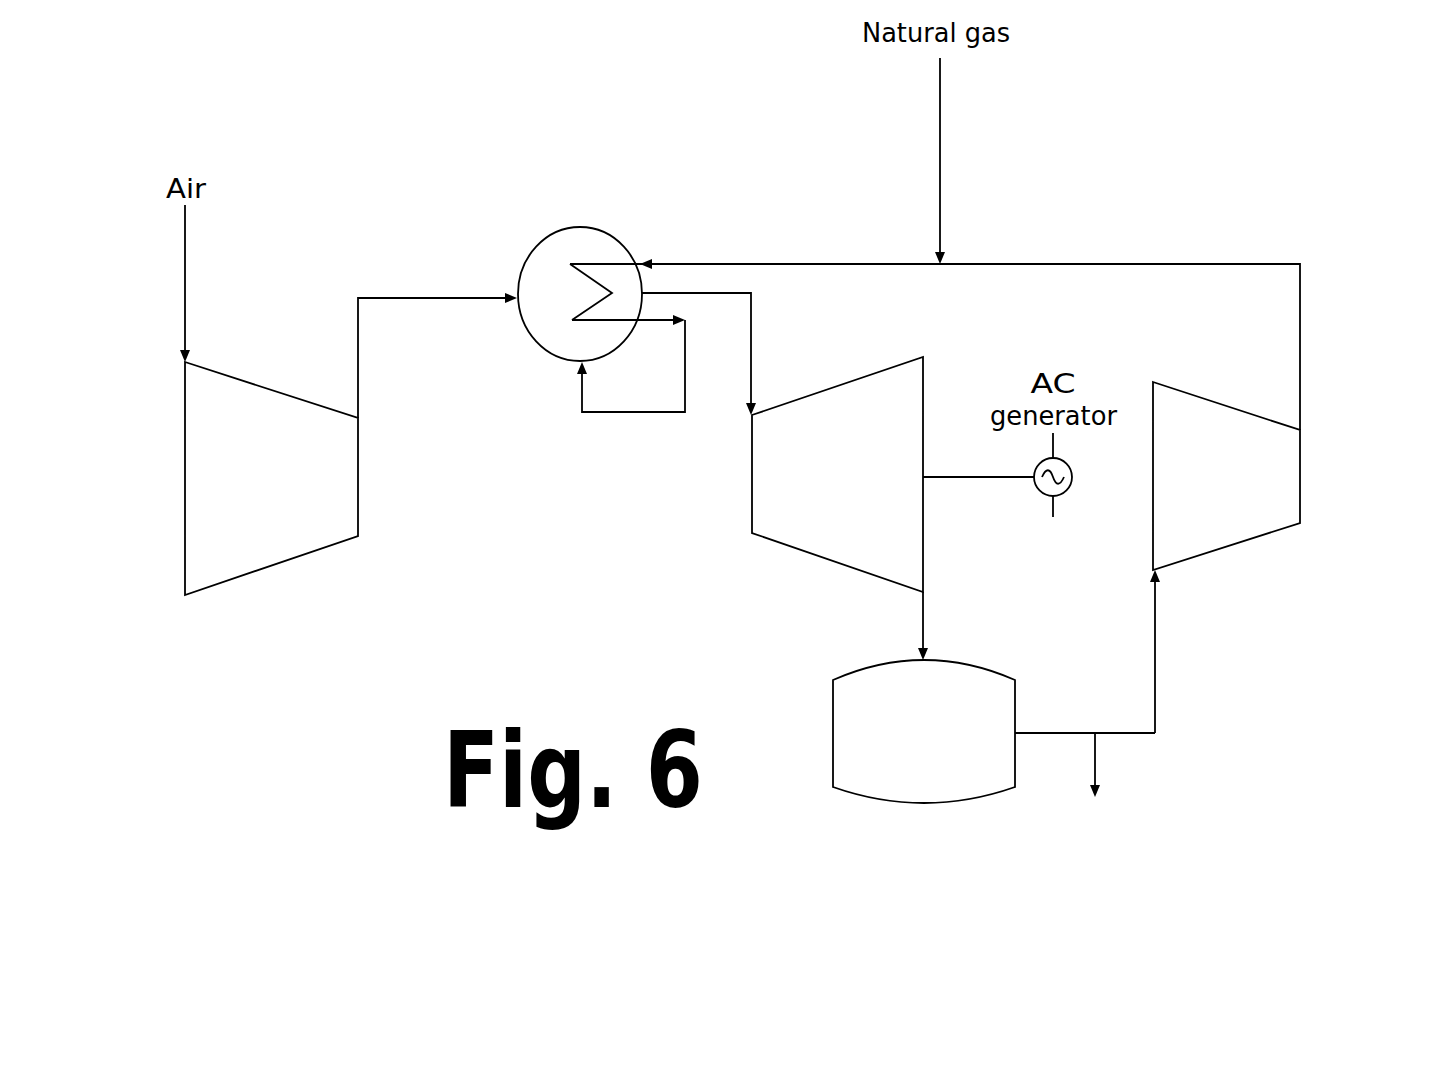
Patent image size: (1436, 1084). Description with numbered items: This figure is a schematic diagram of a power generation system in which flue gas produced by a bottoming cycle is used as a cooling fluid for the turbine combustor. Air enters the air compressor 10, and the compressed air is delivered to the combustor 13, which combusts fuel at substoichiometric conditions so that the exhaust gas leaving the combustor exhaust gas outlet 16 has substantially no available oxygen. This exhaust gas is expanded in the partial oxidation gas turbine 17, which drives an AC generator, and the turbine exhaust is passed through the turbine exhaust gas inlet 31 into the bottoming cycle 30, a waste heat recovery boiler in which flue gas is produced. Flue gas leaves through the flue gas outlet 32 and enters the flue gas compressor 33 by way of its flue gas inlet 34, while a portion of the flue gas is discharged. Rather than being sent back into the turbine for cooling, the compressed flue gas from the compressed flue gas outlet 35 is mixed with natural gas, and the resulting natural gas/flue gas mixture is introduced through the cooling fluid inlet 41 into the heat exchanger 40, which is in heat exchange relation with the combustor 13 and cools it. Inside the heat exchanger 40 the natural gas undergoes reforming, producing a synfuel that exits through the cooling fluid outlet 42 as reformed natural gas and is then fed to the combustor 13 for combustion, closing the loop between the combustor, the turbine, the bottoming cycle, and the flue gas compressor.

The air compressor 10 is at (293, 561).
The combustor 13 is at (575, 226).
The combustor exhaust gas outlet 16 is at (643, 292).
The partial oxidation gas turbine 17 is at (750, 533).
The bottoming cycle 30 is at (833, 712).
The turbine exhaust gas inlet 31 is at (930, 650).
The flue gas outlet 32 is at (1017, 727).
The flue gas compressor 33 is at (1275, 533).
The flue gas inlet 34 is at (1155, 570).
The compressed flue gas outlet 35 is at (1300, 430).
The heat exchanger 40 is at (572, 320).
The cooling fluid inlet 41 is at (640, 262).
The cooling fluid outlet 42 is at (647, 318).